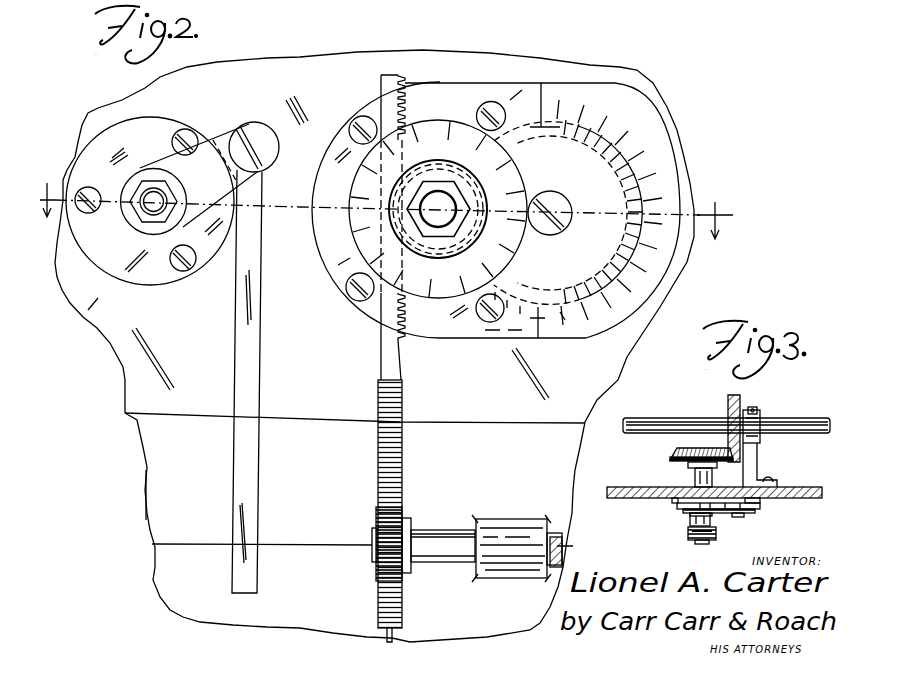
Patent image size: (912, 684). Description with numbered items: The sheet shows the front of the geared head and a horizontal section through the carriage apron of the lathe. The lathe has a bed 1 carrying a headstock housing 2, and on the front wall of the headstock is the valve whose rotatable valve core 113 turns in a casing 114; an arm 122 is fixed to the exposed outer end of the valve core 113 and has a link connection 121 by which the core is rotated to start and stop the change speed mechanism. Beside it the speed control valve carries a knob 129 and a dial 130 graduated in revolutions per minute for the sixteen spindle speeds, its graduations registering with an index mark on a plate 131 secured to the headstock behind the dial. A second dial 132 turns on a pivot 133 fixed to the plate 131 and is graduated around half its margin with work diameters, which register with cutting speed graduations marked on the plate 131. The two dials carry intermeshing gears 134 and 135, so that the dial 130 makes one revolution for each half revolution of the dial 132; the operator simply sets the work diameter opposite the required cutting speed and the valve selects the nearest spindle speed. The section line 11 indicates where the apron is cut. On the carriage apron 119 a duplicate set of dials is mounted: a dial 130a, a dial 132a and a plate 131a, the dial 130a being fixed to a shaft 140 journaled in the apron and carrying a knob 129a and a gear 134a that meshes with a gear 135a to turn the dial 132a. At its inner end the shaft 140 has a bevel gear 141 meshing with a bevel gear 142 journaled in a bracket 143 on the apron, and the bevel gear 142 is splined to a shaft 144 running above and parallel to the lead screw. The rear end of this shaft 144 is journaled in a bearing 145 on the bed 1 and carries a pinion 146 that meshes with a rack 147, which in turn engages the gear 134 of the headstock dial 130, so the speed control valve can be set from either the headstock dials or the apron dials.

In FIG. 2, the bed 1 is at (153, 497).
In FIG. 2, the headstock housing 2 is at (303, 73).
In FIG. 2, the section line 11 is at (385, 221).
In FIG. 2, the valve core 113 is at (157, 197).
In FIG. 2, the casing 114 is at (108, 143).
In FIG. 2, the link connection 121 is at (240, 360).
In FIG. 2, the arm 122 is at (205, 158).
In FIG. 2, the knob 129 is at (433, 253).
In FIG. 2, the dial 130 is at (448, 122).
In FIG. 2, the plate 131 is at (337, 263).
In FIG. 2, the second dial 132 is at (535, 283).
In FIG. 2, the pivot 133 is at (550, 234).
In FIG. 2, the gear 134 is at (400, 218).
In FIG. 2, the gear 135 is at (527, 137).
In FIG. 3, the shaft 140 is at (695, 476).
In FIG. 3, the bevel gear 141 is at (677, 452).
In FIG. 3, the bevel gear 142 is at (740, 397).
In FIG. 3, the bracket 143 is at (755, 461).
In FIG. 2, the shaft 144 is at (448, 547).
In FIG. 3, the shaft 144 is at (642, 423).
In FIG. 2, the bearing 145 is at (508, 525).
In FIG. 2, the pinion 146 is at (402, 510).
In FIG. 2, the rack 147 is at (378, 403).
In FIG. 3, the carriage apron 119 is at (623, 487).
In FIG. 3, the knob 129a is at (692, 538).
In FIG. 3, the dial 130a is at (685, 515).
In FIG. 3, the plate 131a is at (677, 505).
In FIG. 3, the dial 132a is at (750, 513).
In FIG. 3, the gear 134a is at (712, 522).
In FIG. 3, the gear 135a is at (757, 510).